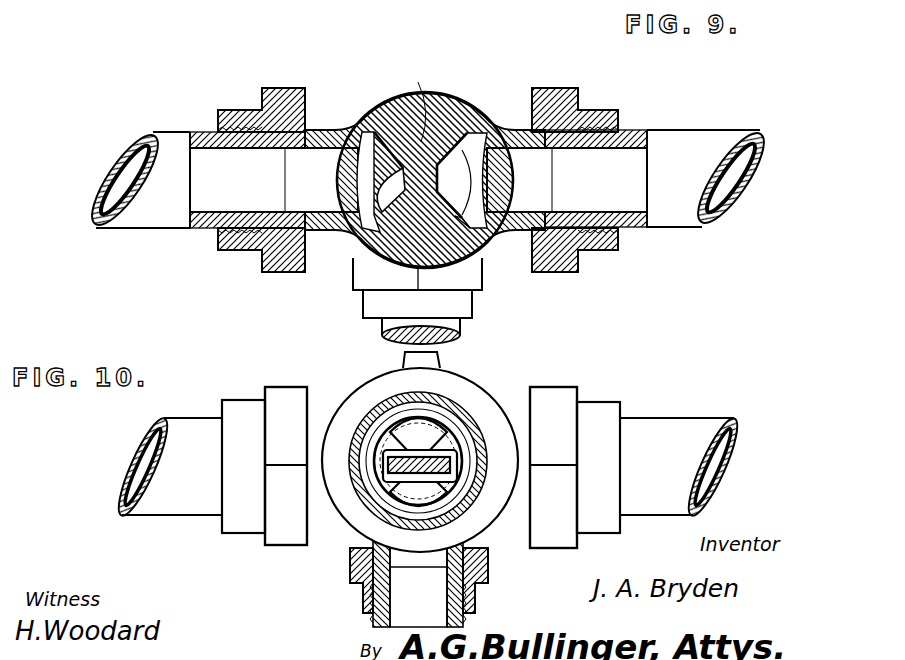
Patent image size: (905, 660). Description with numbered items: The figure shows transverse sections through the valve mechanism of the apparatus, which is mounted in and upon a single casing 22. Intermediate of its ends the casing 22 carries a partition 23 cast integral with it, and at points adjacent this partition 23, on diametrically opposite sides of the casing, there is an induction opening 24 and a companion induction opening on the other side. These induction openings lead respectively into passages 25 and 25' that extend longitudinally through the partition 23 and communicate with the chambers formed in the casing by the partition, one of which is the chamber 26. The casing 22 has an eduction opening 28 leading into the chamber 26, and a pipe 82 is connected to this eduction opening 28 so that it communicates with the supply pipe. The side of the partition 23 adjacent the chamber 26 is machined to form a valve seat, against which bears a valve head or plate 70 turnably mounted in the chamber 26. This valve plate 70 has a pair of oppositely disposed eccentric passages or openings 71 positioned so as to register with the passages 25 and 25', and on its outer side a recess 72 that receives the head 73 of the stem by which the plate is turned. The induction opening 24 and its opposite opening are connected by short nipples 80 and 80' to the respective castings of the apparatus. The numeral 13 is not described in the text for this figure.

In FIG. 10, the coupling nut 13 is at (421, 466).
In FIG. 9, the casing 22 is at (466, 98).
In FIG. 10, the casing 22 is at (446, 394).
In FIG. 9, the partition 23 is at (413, 101).
In FIG. 9, the induction opening 24 is at (510, 106).
In FIG. 10, the passage 25 is at (421, 467).
In FIG. 9, the passage 25' is at (418, 180).
In FIG. 10, the passage 25' is at (462, 500).
In FIG. 10, the chamber 26 is at (366, 425).
In FIG. 10, the eduction opening 28 is at (488, 578).
In FIG. 10, the valve head or plate 70 is at (397, 400).
In FIG. 10, the eccentric passages or openings 71 is at (436, 450).
In FIG. 10, the recess 72 is at (455, 450).
In FIG. 10, the head 73 is at (390, 457).
In FIG. 9, the nipple 80 is at (690, 178).
In FIG. 10, the nipple 80 is at (166, 467).
In FIG. 9, the nipple 80' is at (135, 180).
In FIG. 10, the nipple 80' is at (683, 467).
In FIG. 9, the pipe 82 is at (382, 328).
In FIG. 10, the pipe 82 is at (400, 617).